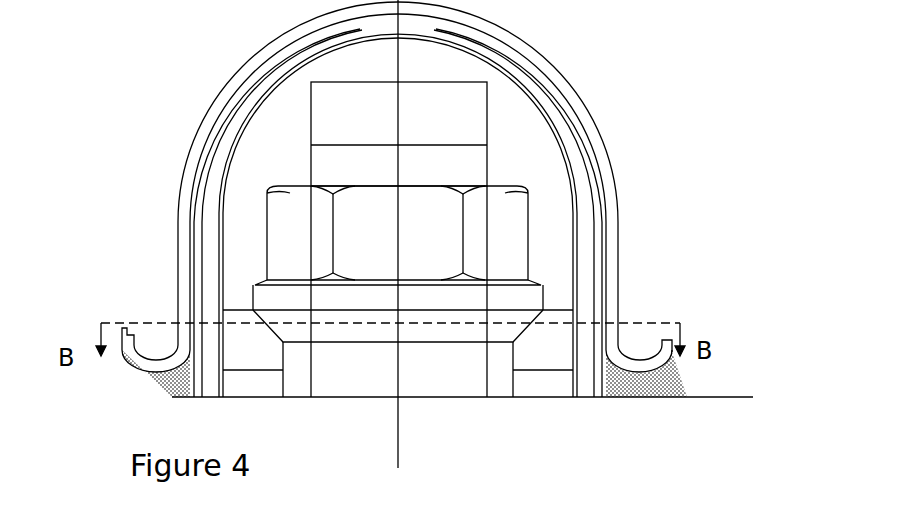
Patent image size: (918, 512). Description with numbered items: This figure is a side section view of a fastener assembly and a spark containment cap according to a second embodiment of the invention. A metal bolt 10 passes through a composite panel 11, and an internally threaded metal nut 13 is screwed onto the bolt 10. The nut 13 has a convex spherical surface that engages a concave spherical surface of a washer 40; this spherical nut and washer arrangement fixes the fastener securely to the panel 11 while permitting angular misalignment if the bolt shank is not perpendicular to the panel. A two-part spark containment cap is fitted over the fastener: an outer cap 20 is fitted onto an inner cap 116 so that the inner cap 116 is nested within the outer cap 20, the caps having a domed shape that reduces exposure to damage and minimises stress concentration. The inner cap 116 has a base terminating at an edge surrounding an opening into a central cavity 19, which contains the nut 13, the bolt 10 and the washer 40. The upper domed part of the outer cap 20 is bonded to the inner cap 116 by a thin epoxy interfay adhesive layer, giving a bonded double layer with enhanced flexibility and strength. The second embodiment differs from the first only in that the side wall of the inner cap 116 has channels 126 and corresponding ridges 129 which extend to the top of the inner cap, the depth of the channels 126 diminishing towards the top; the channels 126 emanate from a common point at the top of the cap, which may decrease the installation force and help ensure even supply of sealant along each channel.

The metal bolt 10 is at (455, 108).
The composite panel 11 is at (705, 397).
The internally threaded metal nut 13 is at (500, 240).
The central cavity 19 is at (292, 172).
The outer cap 20 is at (583, 123).
The washer 40 is at (550, 345).
The inner cap 116 is at (268, 85).
The channels 126 is at (210, 263).
The ridges 129 is at (233, 157).